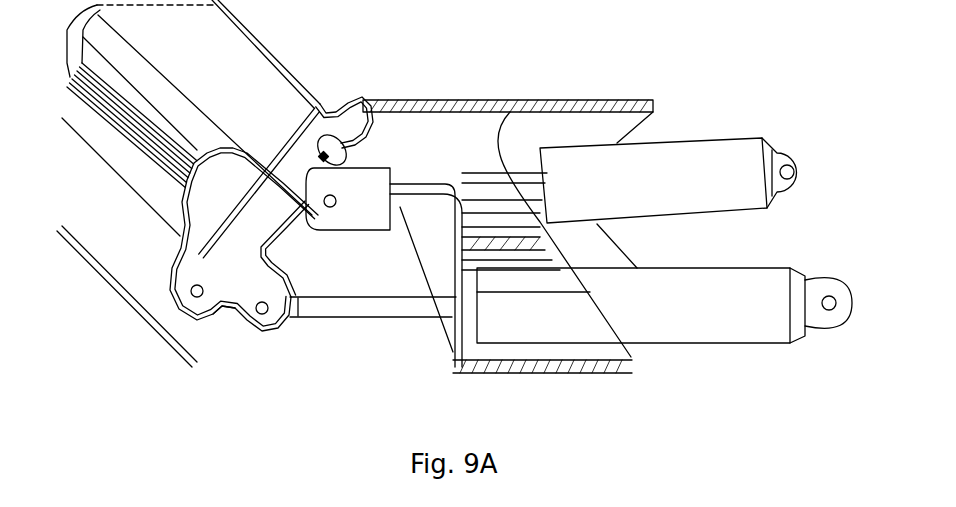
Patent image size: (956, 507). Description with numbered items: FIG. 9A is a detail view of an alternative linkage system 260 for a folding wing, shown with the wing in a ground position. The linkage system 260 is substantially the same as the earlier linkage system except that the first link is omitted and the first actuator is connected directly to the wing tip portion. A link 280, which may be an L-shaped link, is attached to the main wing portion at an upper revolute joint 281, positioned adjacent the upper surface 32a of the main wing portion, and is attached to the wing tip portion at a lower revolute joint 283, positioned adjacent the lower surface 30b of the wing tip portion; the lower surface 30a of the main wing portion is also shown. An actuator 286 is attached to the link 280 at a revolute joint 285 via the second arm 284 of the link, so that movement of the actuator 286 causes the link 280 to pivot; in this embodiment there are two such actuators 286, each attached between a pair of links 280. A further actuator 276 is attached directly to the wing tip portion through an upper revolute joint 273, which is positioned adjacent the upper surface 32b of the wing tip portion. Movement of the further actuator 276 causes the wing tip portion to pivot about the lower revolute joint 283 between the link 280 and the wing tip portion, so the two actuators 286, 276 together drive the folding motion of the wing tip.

The upper surface of the wing tip portion 32b is at (267, 50).
The upper surface of the main wing portion 32a is at (500, 99).
The lower surface of the wing tip portion 30b is at (108, 288).
The lower surface of the main wing portion 30a is at (555, 374).
The upper revolute joint 281 is at (330, 152).
The upper revolute joint 273 is at (336, 197).
The link 280 is at (258, 229).
The lower revolute joint 283 is at (195, 298).
The second arm 284 is at (247, 300).
The revolute joint 285 is at (282, 332).
The further actuator 276 is at (701, 162).
The actuator 286 is at (720, 328).
The linkage system 260 is at (297, 398).